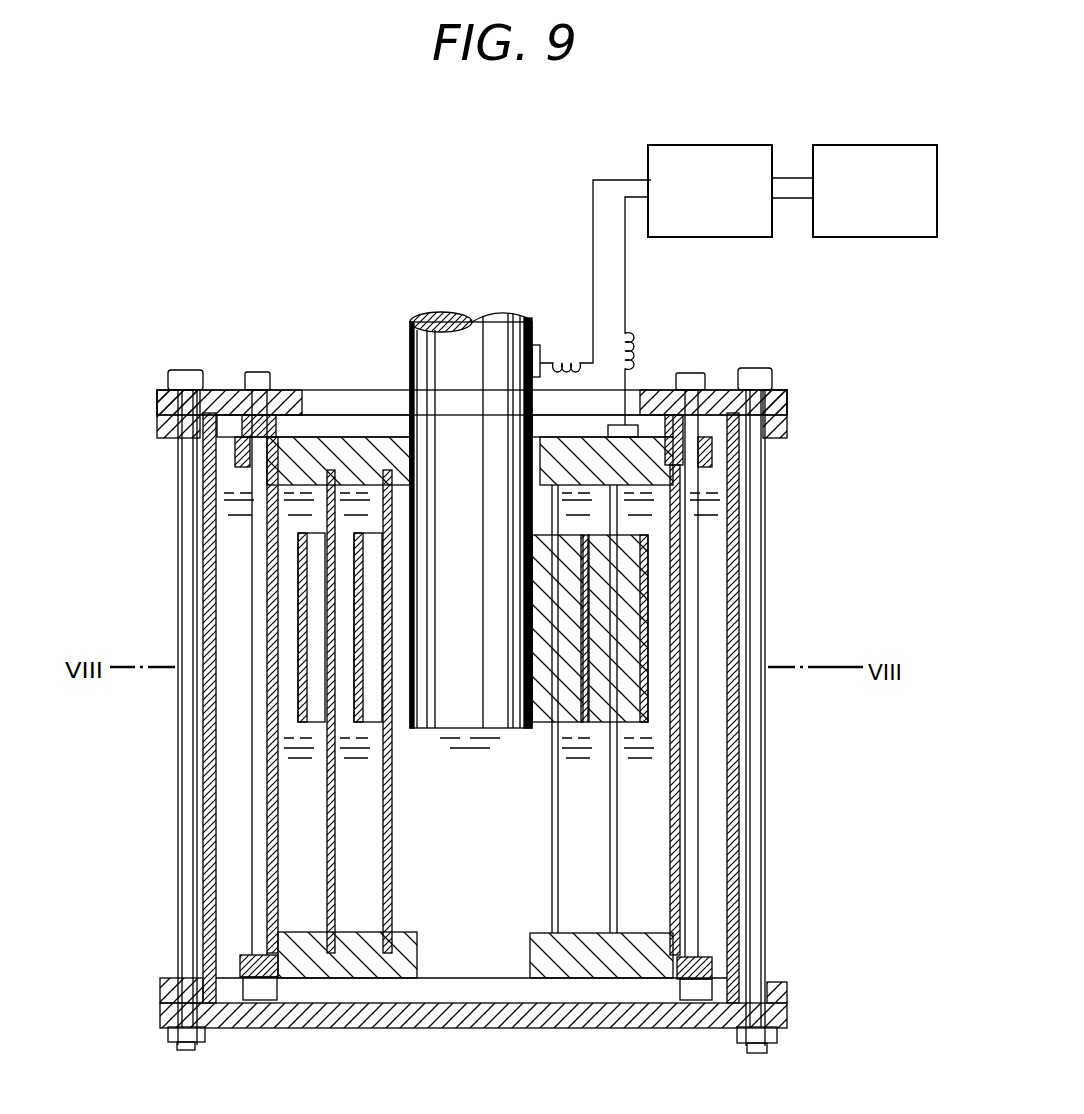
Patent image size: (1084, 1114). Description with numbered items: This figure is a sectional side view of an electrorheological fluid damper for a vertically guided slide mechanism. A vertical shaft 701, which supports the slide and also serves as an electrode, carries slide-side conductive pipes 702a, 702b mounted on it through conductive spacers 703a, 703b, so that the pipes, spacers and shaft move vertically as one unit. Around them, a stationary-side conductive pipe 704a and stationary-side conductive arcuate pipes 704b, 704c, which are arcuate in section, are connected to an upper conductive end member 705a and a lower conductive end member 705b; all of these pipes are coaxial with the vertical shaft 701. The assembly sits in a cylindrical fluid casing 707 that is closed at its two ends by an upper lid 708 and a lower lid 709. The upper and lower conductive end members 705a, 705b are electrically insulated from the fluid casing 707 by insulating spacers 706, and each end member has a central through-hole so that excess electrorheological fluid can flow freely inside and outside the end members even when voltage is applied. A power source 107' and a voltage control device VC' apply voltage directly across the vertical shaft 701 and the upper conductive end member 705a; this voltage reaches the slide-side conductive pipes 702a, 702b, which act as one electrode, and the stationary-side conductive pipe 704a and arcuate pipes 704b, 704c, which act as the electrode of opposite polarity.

The vertical shaft 701 is at (503, 353).
The slide-side conductive pipe 702a is at (300, 578).
The slide-side conductive pipe 702b is at (353, 623).
The conductive spacer 703a is at (567, 698).
The conductive spacer 703b is at (632, 670).
The stationary-side conductive pipe 704a is at (273, 825).
The stationary-side conductive arcuate pipe 704b is at (328, 857).
The stationary-side conductive arcuate pipe 704c is at (388, 887).
The upper conductive end member 705a is at (350, 455).
The lower conductive end member 705b is at (302, 960).
The insulating spacer 706 is at (240, 432).
The cylindrical fluid casing 707 is at (207, 512).
The upper lid 708 is at (717, 400).
The lower lid 709 is at (612, 1013).
The voltage control device VC' is at (730, 166).
The power source 107' is at (875, 166).